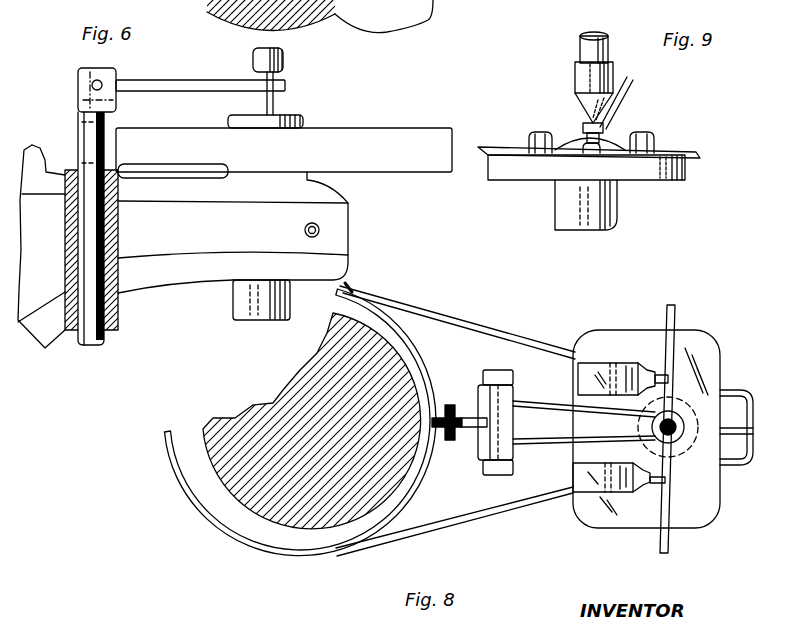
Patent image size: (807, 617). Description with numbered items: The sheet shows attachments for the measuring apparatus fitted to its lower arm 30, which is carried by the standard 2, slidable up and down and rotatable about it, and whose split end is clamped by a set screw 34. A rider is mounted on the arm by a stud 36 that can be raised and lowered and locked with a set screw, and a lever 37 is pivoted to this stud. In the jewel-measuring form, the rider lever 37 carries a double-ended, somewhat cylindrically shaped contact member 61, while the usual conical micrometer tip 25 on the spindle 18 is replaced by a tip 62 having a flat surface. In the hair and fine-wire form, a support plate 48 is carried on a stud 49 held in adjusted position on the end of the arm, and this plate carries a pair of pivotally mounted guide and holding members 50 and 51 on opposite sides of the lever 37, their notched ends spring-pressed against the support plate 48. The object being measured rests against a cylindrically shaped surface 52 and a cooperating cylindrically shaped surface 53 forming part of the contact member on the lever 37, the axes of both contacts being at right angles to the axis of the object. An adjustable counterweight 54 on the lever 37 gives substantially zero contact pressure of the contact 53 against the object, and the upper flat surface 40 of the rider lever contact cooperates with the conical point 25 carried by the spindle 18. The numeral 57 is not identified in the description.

In FIG. 8, the standard 2 is at (268, 408).
In FIG. 9, the spindle 18 is at (582, 48).
In FIG. 9, the conical contact member 25 is at (583, 110).
In FIG. 6, the lower arm 30 is at (205, 258).
In FIG. 8, the lower arm 30 is at (513, 338).
In FIG. 6, the set screw 34 is at (320, 230).
In FIG. 6, the stud 36 is at (80, 340).
In FIG. 6, the lever 37 is at (190, 74).
In FIG. 8, the lever 37 is at (542, 403).
In FIG. 9, the flat surface 40 is at (622, 93).
In FIG. 9, the support plate 48 is at (670, 180).
In FIG. 8, the support plate 48 is at (703, 337).
In FIG. 6, the stud 49 is at (240, 300).
In FIG. 9, the stud 49 is at (578, 215).
In FIG. 9, the guide and holding member 50 is at (651, 140).
In FIG. 8, the guide and holding member 50 is at (598, 370).
In FIG. 9, the guide and holding member 51 is at (528, 135).
In FIG. 8, the guide and holding member 51 is at (597, 484).
In FIG. 9, the cylindrically shaped surface 52 is at (590, 156).
In FIG. 9, the cylindrically shaped surface 53 is at (606, 134).
In FIG. 8, the adjustable counterweight 54 is at (462, 418).
In FIG. 9, the wire 57 is at (630, 102).
In FIG. 6, the contact member 61 is at (277, 104).
In FIG. 6, the tip 62 is at (285, 60).